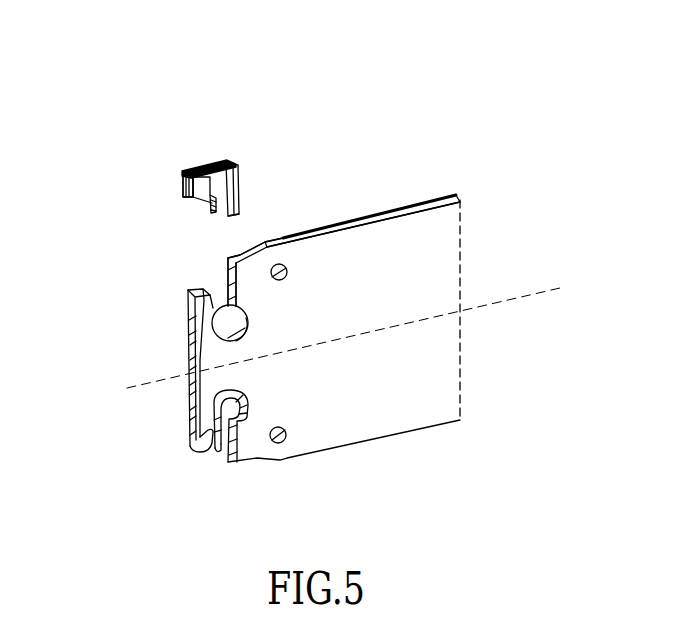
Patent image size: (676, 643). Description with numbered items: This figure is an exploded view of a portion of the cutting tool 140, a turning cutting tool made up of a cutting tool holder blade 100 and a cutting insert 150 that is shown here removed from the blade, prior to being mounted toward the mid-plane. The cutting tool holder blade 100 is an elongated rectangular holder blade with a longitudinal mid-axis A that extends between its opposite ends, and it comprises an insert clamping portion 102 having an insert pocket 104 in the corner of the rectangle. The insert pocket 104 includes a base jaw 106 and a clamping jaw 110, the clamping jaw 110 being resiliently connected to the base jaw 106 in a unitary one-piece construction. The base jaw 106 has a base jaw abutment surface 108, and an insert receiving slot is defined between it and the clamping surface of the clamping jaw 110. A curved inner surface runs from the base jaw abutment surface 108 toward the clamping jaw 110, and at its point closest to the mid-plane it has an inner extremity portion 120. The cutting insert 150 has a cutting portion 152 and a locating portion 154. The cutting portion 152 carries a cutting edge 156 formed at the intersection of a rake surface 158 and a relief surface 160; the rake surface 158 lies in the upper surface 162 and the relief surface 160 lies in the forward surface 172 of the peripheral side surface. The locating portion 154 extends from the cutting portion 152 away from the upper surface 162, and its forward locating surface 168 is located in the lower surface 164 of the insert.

The cutting tool holder blade 100 is at (402, 200).
The insert clamping portion 102 is at (155, 392).
The insert pocket 104 is at (222, 472).
The base jaw 106 is at (260, 262).
The base jaw abutment surface 108 is at (234, 280).
The clamping jaw 110 is at (190, 311).
The inner extremity portion 120 is at (249, 332).
The cutting tool 140 is at (390, 125).
The cutting insert 150 is at (173, 163).
The cutting portion 152 is at (175, 158).
The locating portion 154 is at (247, 176).
The cutting edge 156 is at (183, 182).
The rake surface 158 is at (185, 170).
The relief surface 160 is at (183, 200).
The upper surface 162 is at (207, 160).
The lower surface 164 is at (221, 219).
The forward locating surface 168 is at (204, 215).
The forward surface 172 is at (131, 214).
The longitudinal mid-axis A is at (535, 292).